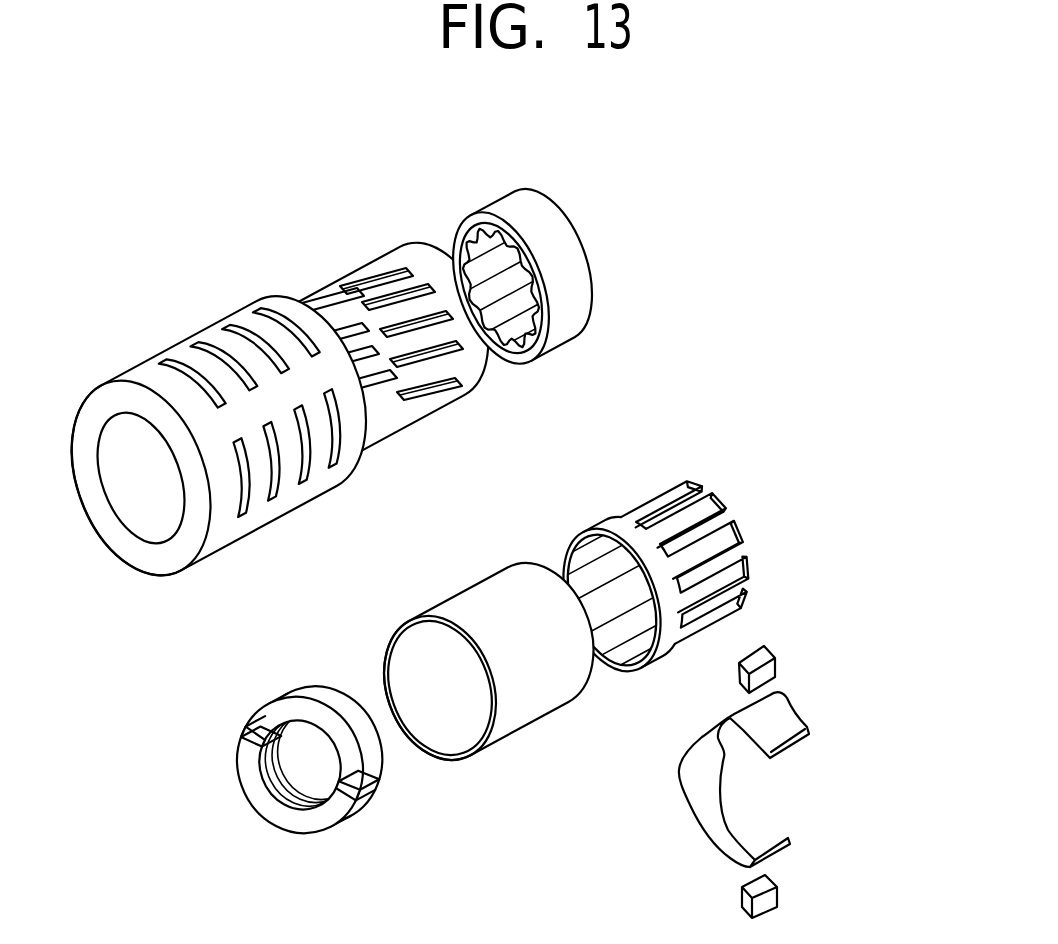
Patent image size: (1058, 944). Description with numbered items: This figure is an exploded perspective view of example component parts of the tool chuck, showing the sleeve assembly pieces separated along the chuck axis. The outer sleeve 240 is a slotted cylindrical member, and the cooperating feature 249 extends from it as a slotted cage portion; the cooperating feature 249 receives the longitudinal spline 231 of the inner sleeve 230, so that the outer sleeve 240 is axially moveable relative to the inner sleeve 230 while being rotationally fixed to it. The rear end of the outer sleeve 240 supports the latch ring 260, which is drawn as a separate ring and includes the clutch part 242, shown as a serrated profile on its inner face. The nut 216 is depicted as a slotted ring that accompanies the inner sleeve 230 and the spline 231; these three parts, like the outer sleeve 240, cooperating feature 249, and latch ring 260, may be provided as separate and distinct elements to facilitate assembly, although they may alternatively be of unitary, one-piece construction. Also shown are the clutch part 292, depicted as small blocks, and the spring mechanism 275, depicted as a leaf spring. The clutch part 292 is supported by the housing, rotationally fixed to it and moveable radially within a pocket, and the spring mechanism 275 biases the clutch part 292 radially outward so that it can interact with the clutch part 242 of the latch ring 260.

The nut 216 is at (328, 688).
The inner sleeve 230 is at (482, 595).
The longitudinal spline 231 is at (660, 490).
The outer sleeve 240 is at (205, 330).
The clutch part 242 is at (530, 358).
The cooperating feature 249 is at (402, 247).
The latch ring 260 is at (527, 192).
The spring mechanism 275 is at (808, 727).
The clutch part 292 is at (777, 658).